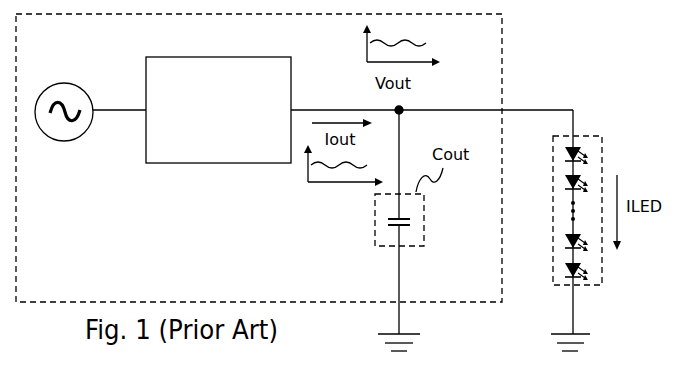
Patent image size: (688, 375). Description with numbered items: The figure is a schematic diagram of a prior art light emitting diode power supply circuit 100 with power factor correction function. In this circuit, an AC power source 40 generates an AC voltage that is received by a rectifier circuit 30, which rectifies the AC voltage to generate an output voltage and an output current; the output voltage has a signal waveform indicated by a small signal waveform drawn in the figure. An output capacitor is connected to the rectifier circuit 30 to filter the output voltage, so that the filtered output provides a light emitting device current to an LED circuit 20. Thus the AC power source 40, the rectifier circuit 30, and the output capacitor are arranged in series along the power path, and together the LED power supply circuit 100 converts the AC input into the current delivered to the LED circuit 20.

The LED power supply circuit 100 is at (63, 289).
The AC power source 40 is at (62, 80).
The rectifier circuit 30 is at (180, 152).
The LED circuit 20 is at (542, 190).